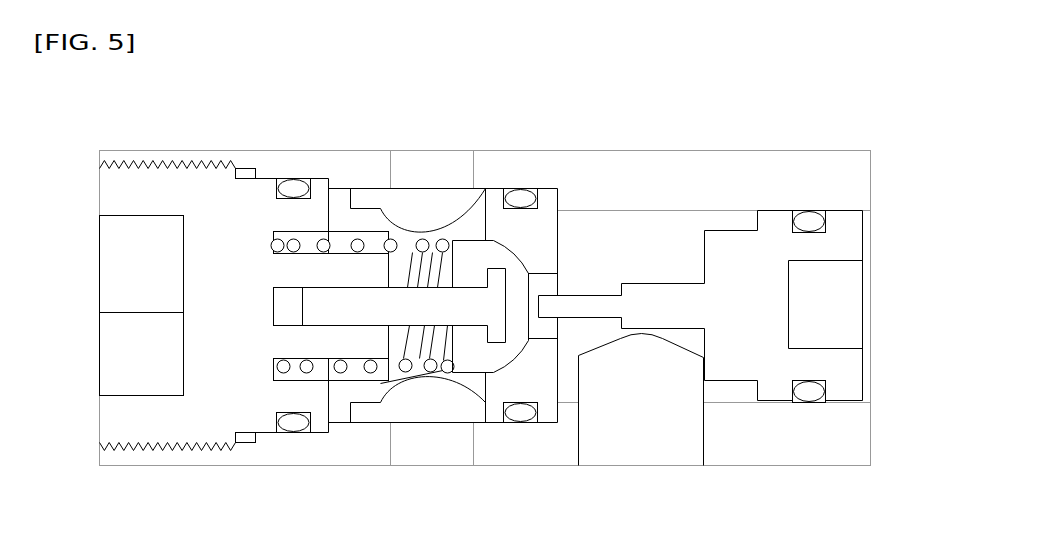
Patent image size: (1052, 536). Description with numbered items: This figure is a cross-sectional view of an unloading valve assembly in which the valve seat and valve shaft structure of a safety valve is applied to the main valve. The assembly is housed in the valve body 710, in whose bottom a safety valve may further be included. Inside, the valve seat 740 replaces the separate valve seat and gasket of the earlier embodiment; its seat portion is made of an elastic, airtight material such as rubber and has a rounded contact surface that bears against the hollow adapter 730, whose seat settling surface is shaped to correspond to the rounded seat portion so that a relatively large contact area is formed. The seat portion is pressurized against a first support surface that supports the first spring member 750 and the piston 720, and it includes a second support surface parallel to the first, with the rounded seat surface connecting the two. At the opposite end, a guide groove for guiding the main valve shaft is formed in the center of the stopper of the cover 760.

The valve body 710 is at (700, 172).
The piston 720 is at (853, 225).
The hollow adapter 730 is at (545, 412).
The valve seat 740 is at (497, 247).
The first spring member 750 is at (354, 243).
The cover 760 is at (122, 190).